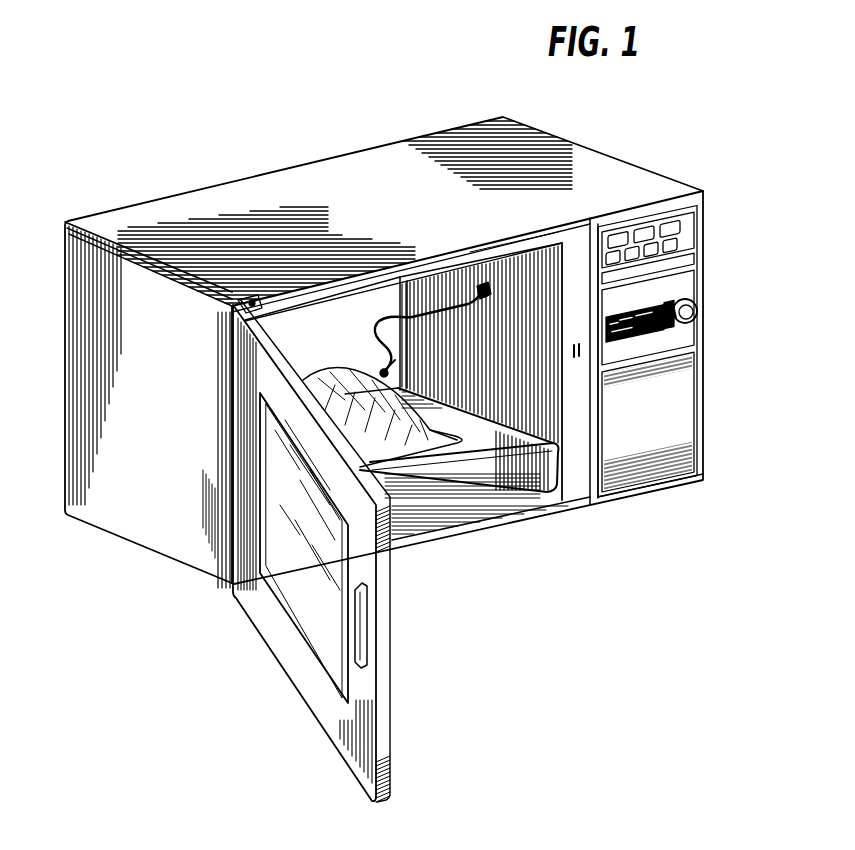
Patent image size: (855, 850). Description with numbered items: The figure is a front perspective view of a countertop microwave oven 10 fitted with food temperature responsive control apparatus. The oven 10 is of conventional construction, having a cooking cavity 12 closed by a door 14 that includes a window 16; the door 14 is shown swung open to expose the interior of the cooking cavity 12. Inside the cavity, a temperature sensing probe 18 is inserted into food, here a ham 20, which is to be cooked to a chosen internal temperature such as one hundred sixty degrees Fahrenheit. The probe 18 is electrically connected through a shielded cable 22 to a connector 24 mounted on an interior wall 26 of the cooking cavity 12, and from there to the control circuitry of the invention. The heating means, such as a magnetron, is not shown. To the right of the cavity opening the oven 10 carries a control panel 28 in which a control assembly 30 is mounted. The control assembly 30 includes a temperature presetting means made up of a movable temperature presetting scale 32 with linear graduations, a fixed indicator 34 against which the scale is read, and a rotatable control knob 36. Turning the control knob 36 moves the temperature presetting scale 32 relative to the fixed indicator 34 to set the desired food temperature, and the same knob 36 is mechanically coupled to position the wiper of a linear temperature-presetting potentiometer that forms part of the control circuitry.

The countertop microwave oven 10 is at (324, 124).
The cooking cavity 12 is at (406, 388).
The door 14 is at (309, 548).
The window 16 is at (262, 440).
The temperature sensing probe 18 is at (382, 369).
The ham 20 is at (331, 378).
The shielded cable 22 is at (443, 312).
The connector 24 is at (490, 292).
The interior wall 26 is at (491, 268).
The control panel 28 is at (643, 242).
The control assembly 30 is at (665, 353).
The temperature presetting scale 32 is at (635, 323).
The fixed indicator 34 is at (669, 315).
The control knob 36 is at (698, 312).